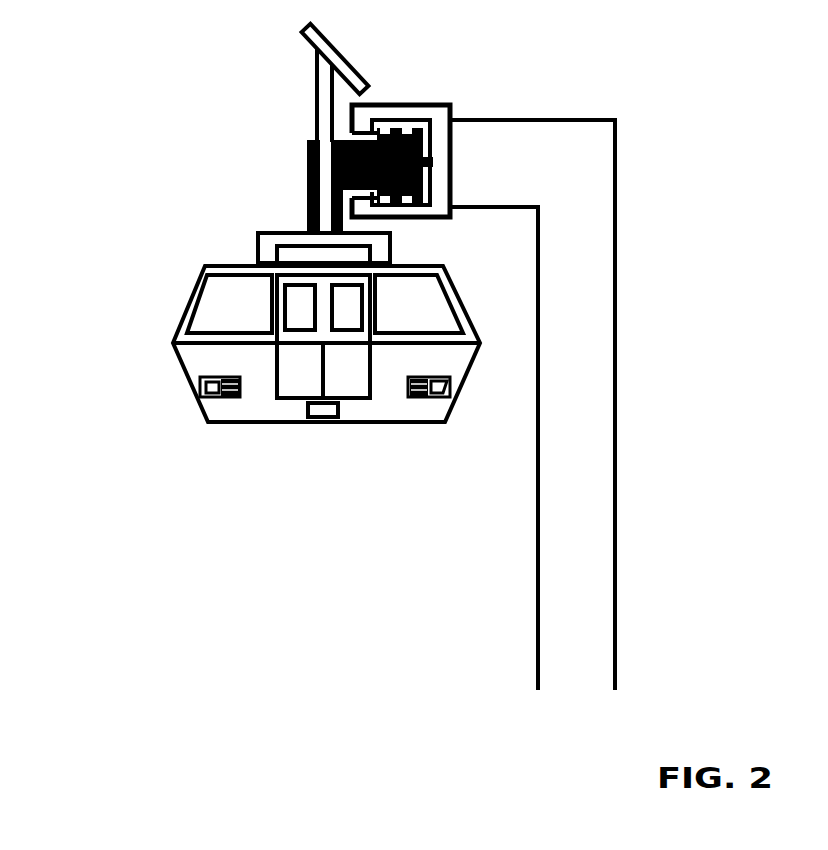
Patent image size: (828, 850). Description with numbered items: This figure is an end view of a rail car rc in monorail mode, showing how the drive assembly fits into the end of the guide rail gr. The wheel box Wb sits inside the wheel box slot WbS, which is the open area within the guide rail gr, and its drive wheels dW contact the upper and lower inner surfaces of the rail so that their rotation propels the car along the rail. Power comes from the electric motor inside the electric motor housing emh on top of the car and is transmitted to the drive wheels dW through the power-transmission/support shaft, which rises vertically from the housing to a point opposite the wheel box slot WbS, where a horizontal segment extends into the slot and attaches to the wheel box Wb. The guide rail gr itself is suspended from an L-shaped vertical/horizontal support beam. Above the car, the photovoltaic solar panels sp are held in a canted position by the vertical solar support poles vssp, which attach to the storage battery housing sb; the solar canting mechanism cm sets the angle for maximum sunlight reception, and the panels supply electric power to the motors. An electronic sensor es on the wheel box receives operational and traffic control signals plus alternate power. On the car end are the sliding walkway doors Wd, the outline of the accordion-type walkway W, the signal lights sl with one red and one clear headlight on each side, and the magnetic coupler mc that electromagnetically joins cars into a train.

The photovoltaic solar panels sp is at (310, 24).
The solar canting mechanism cm is at (317, 64).
The vertical solar support poles vssp is at (320, 111).
The wheel box slot WbS is at (368, 202).
The guide rail gr is at (445, 197).
The wheel box Wb is at (452, 147).
The drive wheels dW is at (412, 128).
The electronic sensor es is at (433, 162).
The electric motor housing emh is at (258, 243).
The storage battery housing sb is at (290, 254).
The rail car rc is at (215, 414).
The walkway W is at (277, 358).
The sliding walkway doors Wd is at (290, 297).
The signal lights sl is at (205, 387).
The magnetic coupler mc is at (325, 417).